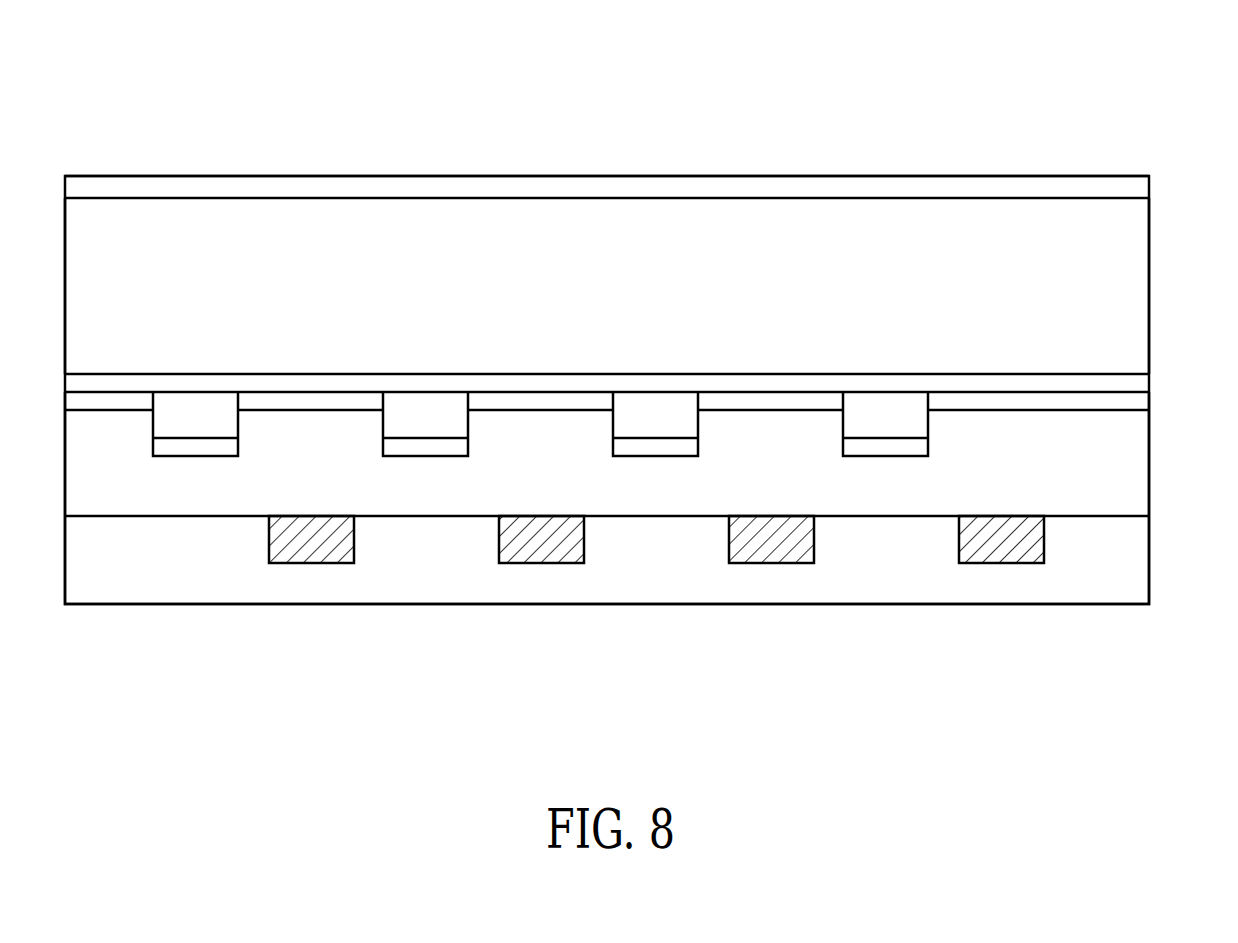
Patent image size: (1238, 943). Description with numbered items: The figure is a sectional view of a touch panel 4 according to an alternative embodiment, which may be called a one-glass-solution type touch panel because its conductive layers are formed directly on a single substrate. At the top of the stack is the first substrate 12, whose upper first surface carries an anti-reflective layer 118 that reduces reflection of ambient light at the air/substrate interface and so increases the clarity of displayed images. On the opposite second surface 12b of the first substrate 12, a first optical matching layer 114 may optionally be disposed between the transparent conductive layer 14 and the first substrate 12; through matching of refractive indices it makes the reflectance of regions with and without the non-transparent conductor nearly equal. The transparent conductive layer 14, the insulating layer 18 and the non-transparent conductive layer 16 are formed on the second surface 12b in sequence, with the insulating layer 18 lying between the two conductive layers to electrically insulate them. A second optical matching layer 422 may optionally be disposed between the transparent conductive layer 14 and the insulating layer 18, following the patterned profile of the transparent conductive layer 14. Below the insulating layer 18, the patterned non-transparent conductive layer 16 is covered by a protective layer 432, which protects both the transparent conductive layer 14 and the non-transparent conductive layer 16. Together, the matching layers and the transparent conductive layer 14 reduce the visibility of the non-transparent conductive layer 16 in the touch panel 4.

The touch panel 4 is at (1087, 88).
The anti-reflective layer 118 is at (1143, 186).
The first substrate 12 is at (1142, 292).
The second surface 12b is at (1118, 373).
The first optical matching layer 114 is at (1142, 386).
The second optical matching layer 422 is at (1135, 401).
The transparent conductive layer 14 is at (913, 418).
The insulating layer 18 is at (1142, 473).
The non-transparent conductive layer 16 is at (1044, 543).
The protective layer 432 is at (1142, 585).